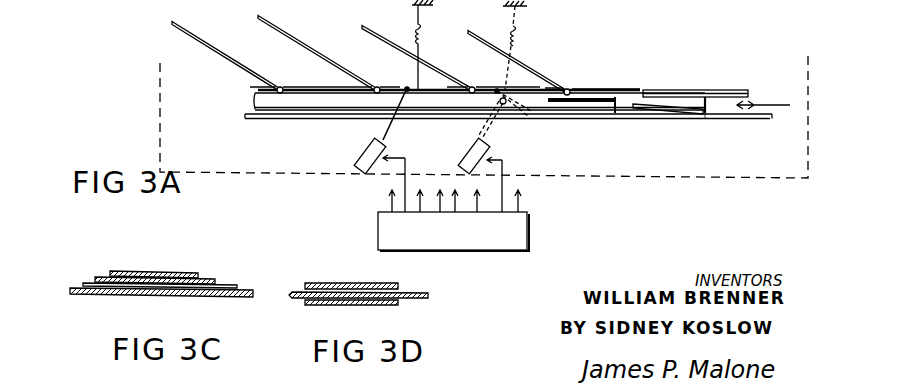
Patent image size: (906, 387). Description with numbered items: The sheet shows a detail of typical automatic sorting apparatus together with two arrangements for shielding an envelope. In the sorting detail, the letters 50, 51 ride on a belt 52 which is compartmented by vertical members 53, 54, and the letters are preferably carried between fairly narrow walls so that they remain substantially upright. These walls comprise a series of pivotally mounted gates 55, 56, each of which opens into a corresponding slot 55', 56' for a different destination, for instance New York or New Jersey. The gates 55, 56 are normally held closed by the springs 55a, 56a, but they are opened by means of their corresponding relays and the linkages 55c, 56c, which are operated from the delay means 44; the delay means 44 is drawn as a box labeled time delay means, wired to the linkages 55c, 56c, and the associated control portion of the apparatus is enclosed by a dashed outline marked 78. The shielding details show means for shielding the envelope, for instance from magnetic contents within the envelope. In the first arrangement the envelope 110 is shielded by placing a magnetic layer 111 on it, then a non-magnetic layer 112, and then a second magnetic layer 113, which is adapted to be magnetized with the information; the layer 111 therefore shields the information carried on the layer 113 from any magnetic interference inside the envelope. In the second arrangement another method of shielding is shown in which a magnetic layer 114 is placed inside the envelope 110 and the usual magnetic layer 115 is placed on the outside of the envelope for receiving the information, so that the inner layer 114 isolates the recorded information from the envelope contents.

In FIG. 3A, the delay means 44 is at (527, 226).
In FIG. 3A, the letter 50 is at (582, 103).
In FIG. 3A, the letter 51 is at (660, 112).
In FIG. 3A, the belt 52 is at (744, 108).
In FIG. 3A, the vertical member 53 is at (706, 112).
In FIG. 3A, the vertical member 54 is at (616, 98).
In FIG. 3A, the gate 55 is at (482, 118).
In FIG. 3A, the slot 55' is at (501, 61).
In FIG. 3A, the spring 55a is at (516, 35).
In FIG. 3A, the linkage 55c is at (482, 130).
In FIG. 3A, the gate 56 is at (366, 117).
In FIG. 3A, the slot 56' is at (276, 55).
In FIG. 3A, the spring 56a is at (417, 35).
In FIG. 3A, the linkage 56c is at (378, 130).
In FIG. 3A, the control unit enclosure 78 is at (728, 179).
In FIG. 3C, the envelope 110 is at (85, 296).
In FIG. 3D, the envelope 110 is at (428, 297).
In FIG. 3C, the magnetic layer 111 is at (83, 284).
In FIG. 3C, the non-magnetic layer 112 is at (100, 277).
In FIG. 3C, the second magnetic layer 113 is at (108, 272).
In FIG. 3D, the magnetic layer 114 is at (399, 304).
In FIG. 3D, the magnetic layer 115 is at (398, 288).